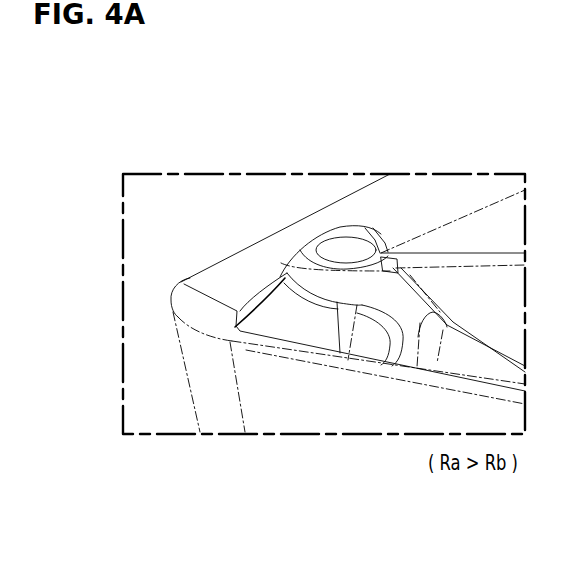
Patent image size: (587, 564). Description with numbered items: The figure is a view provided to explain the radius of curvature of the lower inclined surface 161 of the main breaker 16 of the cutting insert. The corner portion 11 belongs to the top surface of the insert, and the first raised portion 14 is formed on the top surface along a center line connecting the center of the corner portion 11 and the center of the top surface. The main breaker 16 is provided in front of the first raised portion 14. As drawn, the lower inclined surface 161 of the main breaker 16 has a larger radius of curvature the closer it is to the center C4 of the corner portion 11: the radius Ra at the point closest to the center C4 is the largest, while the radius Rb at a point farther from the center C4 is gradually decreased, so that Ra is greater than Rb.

The corner portion 11 is at (178, 286).
The first raised portion 14 is at (470, 231).
The main breaker 16 is at (341, 240).
The lower inclined surface 161 is at (282, 323).
The center of the corner portion C4 is at (161, 303).
The radius of curvature Ra is at (263, 295).
The radius of curvature Rb is at (334, 340).